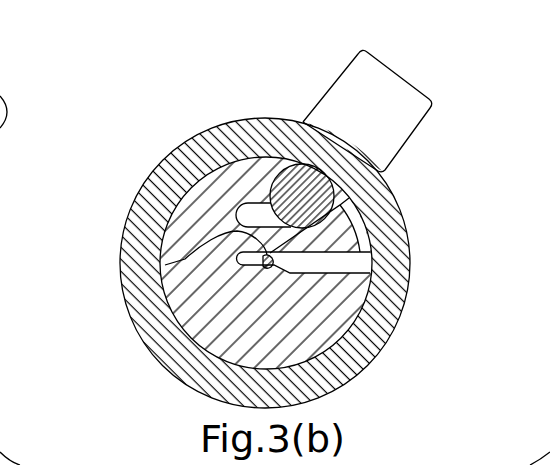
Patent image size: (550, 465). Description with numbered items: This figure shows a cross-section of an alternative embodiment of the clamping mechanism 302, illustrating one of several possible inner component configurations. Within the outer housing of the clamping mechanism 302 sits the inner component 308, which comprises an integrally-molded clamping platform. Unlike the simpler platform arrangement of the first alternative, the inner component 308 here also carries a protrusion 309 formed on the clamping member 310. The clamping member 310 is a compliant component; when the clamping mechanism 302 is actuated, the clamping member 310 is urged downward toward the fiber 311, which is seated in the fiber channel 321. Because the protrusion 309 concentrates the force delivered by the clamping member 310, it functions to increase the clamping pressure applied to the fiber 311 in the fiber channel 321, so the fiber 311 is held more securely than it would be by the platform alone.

The clamping mechanism 302 is at (178, 113).
The inner component 308 is at (200, 220).
The protrusion 309 is at (165, 265).
The clamping member 310 is at (272, 256).
The fiber 311 is at (270, 270).
The fiber channel 321 is at (257, 274).